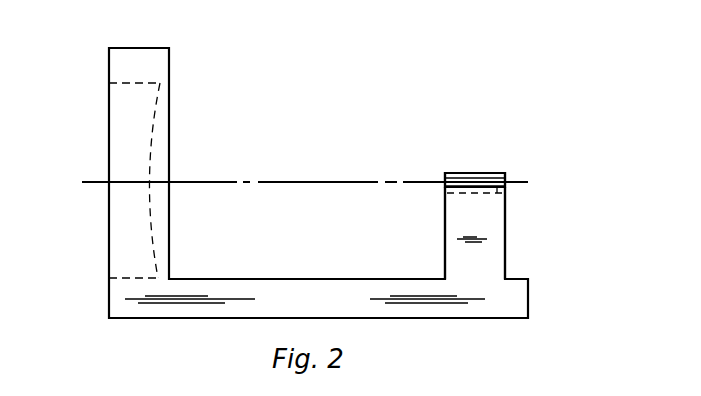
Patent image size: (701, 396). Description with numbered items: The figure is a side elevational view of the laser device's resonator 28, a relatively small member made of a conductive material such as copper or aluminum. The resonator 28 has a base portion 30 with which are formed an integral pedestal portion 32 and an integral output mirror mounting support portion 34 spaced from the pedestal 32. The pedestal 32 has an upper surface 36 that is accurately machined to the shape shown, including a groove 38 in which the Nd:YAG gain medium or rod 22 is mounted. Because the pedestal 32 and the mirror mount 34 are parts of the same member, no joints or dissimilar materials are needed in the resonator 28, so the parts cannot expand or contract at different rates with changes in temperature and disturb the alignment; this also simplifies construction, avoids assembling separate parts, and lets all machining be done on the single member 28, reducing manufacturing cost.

The Nd:YAG gain medium or rod 22 is at (470, 173).
The resonator 28 is at (301, 279).
The base portion 30 is at (265, 298).
The pedestal portion 32 is at (490, 220).
The output mirror mounting support portion 34 is at (128, 126).
The upper surface 36 is at (453, 173).
The groove 38 is at (498, 170).